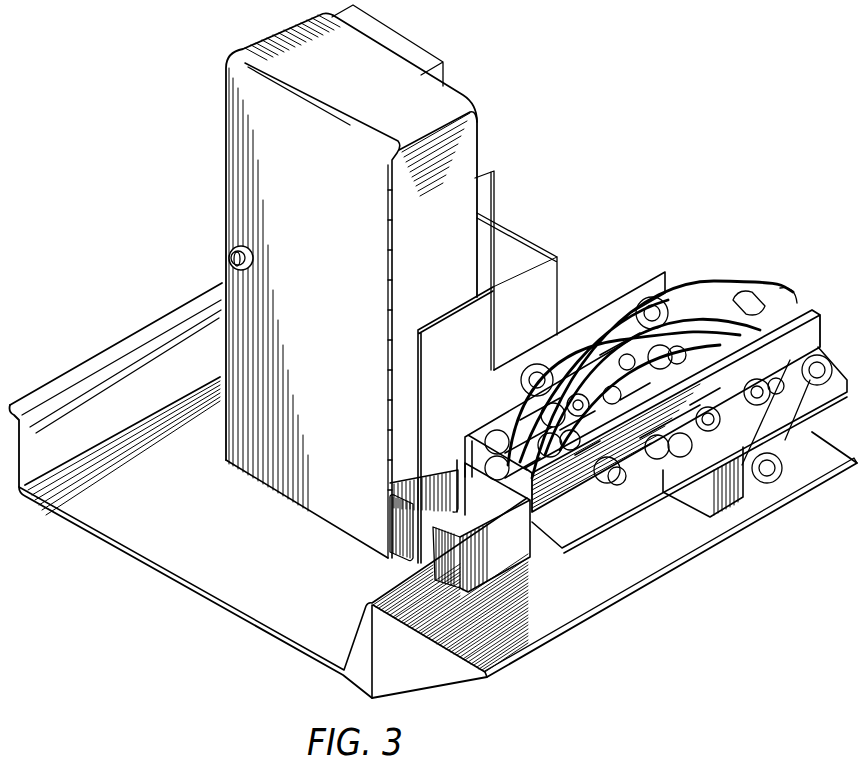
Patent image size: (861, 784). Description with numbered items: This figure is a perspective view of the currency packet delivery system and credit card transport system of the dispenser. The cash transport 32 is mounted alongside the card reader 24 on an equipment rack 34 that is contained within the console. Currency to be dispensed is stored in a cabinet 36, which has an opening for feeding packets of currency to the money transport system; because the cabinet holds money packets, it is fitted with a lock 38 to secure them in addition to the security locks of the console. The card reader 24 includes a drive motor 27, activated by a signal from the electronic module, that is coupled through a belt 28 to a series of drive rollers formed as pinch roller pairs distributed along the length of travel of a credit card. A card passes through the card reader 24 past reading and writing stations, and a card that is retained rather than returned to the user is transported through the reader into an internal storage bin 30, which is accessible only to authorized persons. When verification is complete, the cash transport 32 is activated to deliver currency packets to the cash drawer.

The card reader 24 is at (826, 304).
The drive motor 27 is at (750, 490).
The belt 28 is at (800, 415).
The internal storage bin 30 is at (522, 550).
The cash transport 32 is at (212, 218).
The equipment rack 34 is at (435, 655).
The cabinet 36 is at (266, 43).
The lock 38 is at (230, 250).